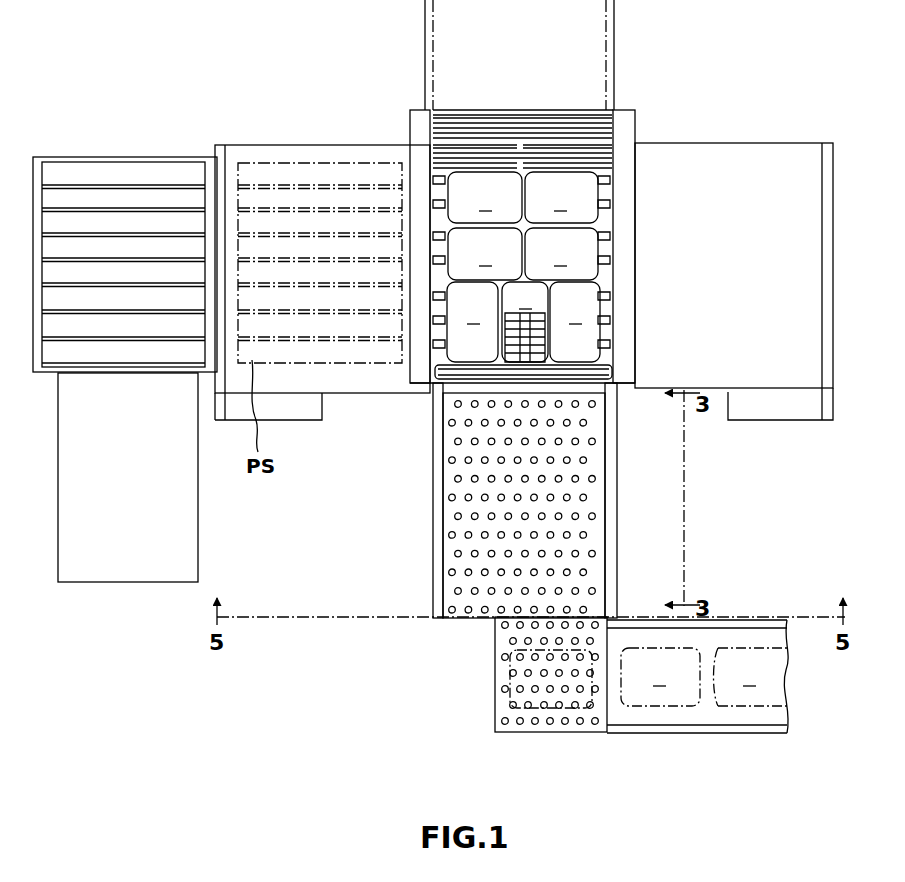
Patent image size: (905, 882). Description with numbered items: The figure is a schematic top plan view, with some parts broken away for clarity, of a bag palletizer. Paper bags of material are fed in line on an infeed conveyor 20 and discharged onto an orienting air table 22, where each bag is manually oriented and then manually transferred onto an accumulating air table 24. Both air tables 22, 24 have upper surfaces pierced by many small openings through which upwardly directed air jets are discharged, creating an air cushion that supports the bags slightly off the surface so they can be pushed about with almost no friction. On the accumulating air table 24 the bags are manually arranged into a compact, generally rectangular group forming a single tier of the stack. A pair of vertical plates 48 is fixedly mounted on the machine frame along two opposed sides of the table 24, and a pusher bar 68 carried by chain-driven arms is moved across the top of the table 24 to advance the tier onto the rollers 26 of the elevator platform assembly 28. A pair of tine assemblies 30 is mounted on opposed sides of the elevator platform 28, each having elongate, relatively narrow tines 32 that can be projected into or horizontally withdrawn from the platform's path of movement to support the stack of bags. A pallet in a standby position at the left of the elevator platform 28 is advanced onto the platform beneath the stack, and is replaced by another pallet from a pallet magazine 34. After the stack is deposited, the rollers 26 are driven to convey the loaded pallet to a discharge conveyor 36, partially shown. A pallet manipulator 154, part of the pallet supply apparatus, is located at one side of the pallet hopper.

The infeed conveyor 20 is at (703, 736).
The orienting air table 22 is at (495, 692).
The accumulating air table 24 is at (455, 541).
The rollers 26 is at (613, 128).
The elevator platform assembly 28 is at (462, 378).
The tine assemblies 30 is at (313, 147).
The tines 32 is at (612, 148).
The pallet magazine 34 is at (130, 152).
The discharge conveyor 36 is at (612, 58).
The vertical plates 48 is at (433, 487).
The pusher bar 68 is at (570, 388).
The pallet manipulator 154 is at (150, 536).